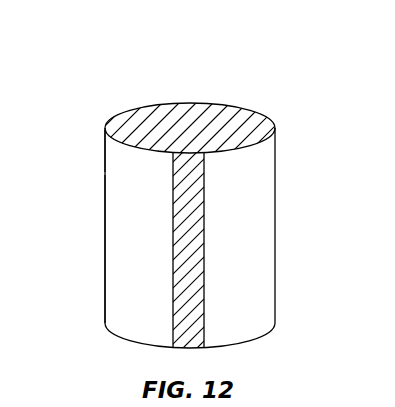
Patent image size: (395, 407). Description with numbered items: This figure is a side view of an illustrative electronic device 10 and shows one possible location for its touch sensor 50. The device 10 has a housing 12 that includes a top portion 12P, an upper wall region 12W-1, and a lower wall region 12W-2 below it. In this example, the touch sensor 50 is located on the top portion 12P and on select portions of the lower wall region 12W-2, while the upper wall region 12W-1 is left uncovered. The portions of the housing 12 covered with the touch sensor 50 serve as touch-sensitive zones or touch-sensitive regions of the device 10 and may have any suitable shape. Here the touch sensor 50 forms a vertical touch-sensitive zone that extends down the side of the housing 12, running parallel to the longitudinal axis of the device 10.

The electronic device 10 is at (283, 63).
The housing 12 is at (275, 275).
The top portion 12P is at (203, 113).
The upper wall region 12W-1 is at (88, 130).
The lower wall region 12W-2 is at (88, 175).
The touch sensor 50 is at (263, 117).